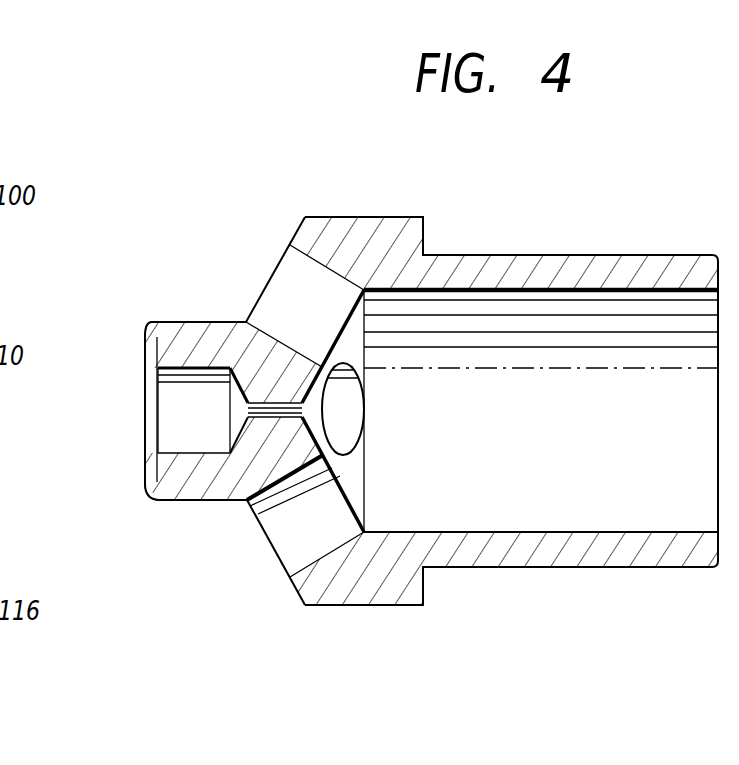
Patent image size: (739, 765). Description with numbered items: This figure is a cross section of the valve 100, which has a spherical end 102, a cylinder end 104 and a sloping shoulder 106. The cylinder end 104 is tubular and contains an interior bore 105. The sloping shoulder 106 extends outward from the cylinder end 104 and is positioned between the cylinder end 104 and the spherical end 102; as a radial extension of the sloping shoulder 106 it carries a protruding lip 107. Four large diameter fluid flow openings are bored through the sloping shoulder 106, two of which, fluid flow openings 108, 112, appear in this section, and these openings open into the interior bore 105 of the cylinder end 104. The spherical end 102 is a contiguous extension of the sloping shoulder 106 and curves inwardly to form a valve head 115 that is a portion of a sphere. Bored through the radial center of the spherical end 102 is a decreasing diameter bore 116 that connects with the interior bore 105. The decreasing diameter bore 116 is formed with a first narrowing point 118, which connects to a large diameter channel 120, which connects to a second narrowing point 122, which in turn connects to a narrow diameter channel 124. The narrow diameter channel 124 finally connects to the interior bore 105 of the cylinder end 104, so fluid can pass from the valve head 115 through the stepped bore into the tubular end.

The valve 100 is at (333, 217).
The spherical end 102 is at (153, 322).
The cylinder end 104 is at (585, 253).
The interior bore 105 is at (590, 392).
The sloping shoulder 106 is at (283, 308).
The protruding lip 107 is at (435, 233).
The fluid flow opening 108 is at (284, 543).
The fluid flow opening 112 is at (283, 272).
The valve head 115 is at (147, 334).
The decreasing diameter bore 116 is at (138, 427).
The first narrowing point 118 is at (147, 458).
The large diameter channel 120 is at (198, 440).
The second narrowing point 122 is at (238, 423).
The narrow diameter channel 124 is at (278, 413).